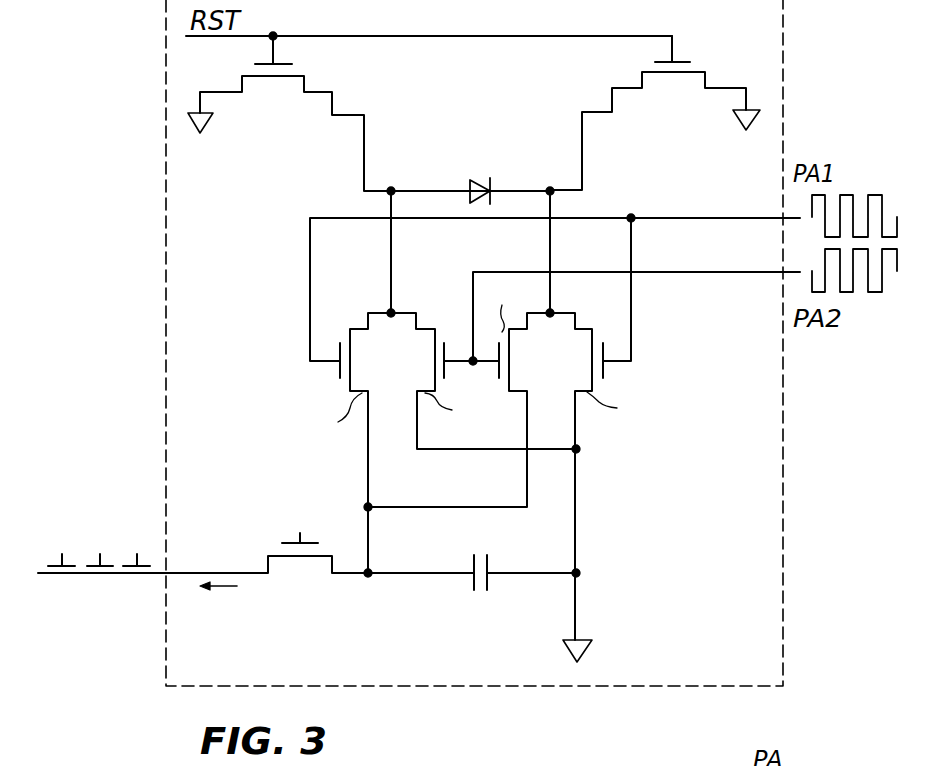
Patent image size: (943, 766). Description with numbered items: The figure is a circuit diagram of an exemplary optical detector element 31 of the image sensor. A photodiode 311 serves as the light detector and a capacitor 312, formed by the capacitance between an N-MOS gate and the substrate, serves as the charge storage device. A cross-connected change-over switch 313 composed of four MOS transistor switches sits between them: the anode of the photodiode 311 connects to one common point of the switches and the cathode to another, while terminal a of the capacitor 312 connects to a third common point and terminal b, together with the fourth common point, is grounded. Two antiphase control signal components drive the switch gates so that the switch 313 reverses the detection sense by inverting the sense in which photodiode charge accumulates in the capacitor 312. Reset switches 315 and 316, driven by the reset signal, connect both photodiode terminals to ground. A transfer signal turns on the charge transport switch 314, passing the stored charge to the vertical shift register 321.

The optical detector element 31 is at (785, 513).
The photodiode 311 is at (480, 178).
The capacitor 312 is at (483, 587).
The cross-connected change-over switch 313 is at (302, 400).
The charge transport switch 314 is at (318, 557).
The reset switch 315 is at (282, 78).
The reset switch 316 is at (678, 74).
The vertical shift register 321 is at (148, 553).